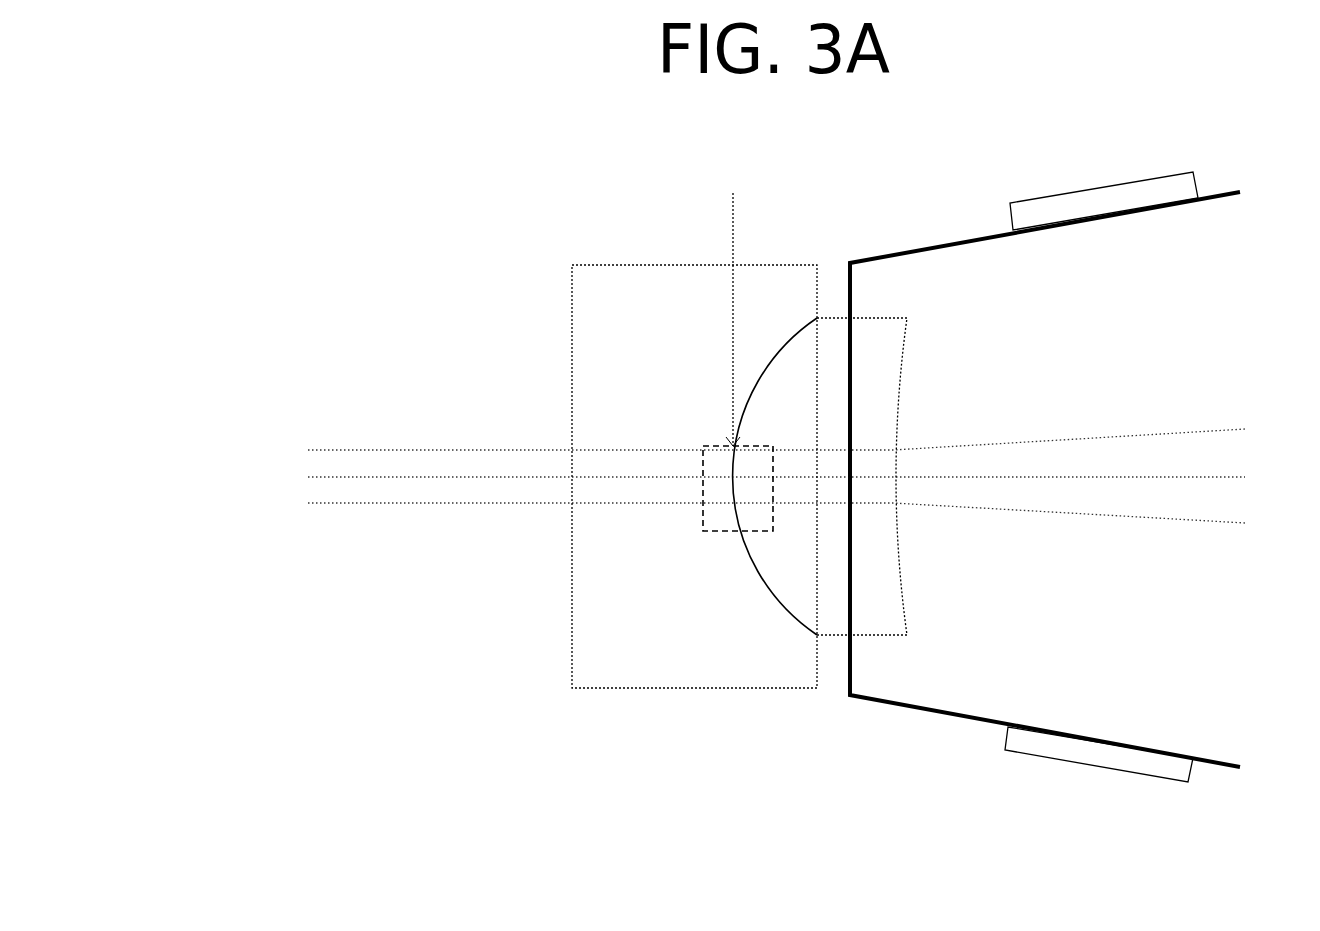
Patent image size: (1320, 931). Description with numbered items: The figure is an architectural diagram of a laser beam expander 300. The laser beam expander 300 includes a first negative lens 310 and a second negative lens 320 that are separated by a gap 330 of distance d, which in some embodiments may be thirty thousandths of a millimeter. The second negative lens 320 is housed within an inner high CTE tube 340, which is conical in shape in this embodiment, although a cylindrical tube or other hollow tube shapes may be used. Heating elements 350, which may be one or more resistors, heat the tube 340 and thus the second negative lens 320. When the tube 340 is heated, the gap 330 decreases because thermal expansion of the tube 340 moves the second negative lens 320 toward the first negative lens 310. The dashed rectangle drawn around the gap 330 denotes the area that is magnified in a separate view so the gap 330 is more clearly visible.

The laser beam expander 300 is at (360, 132).
The first negative lens 310 is at (690, 685).
The second negative lens 320 is at (858, 635).
The gap 330 is at (733, 511).
The inner high CTE tube 340 is at (903, 250).
The heating elements 350 is at (1100, 188).